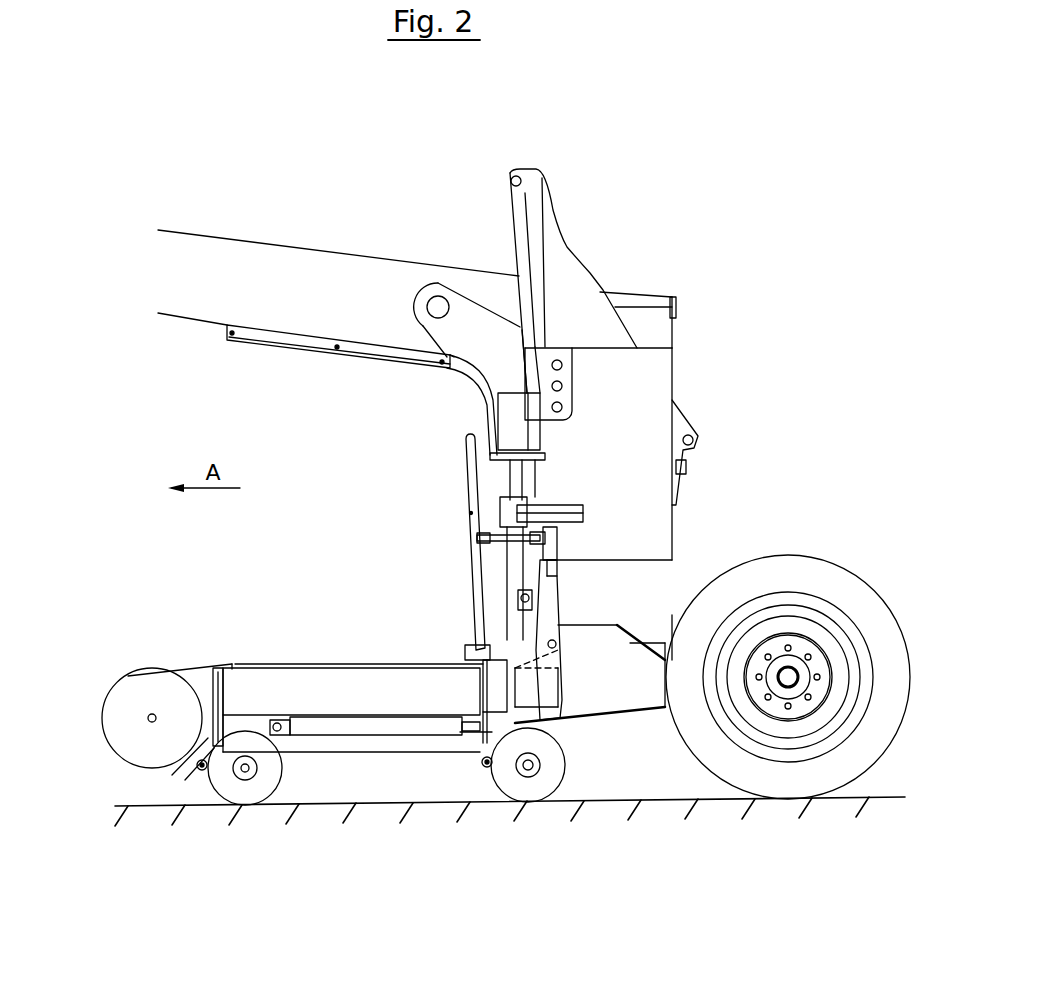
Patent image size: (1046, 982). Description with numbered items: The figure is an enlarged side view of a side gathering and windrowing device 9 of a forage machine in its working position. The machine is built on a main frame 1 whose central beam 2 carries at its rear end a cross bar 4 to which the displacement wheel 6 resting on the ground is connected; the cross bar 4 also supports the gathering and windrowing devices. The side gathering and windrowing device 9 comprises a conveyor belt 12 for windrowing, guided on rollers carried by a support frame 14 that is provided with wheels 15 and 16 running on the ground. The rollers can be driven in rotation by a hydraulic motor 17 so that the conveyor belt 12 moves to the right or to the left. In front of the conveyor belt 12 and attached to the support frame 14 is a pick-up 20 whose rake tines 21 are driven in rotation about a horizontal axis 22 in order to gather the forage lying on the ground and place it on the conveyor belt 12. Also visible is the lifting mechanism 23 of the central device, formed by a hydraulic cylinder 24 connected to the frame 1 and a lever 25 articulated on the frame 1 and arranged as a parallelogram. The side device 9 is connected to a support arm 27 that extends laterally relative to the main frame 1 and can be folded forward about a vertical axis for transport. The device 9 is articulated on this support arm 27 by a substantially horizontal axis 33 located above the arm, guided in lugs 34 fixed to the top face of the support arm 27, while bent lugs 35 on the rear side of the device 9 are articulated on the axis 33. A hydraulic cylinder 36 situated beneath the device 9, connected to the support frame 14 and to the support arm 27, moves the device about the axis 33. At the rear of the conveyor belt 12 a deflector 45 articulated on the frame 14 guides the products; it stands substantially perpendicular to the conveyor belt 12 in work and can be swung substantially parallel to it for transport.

The main frame 1 is at (639, 283).
The central beam 2 is at (217, 253).
The cross bar 4 is at (686, 360).
The displacement wheel 6 is at (778, 760).
The side gathering and windrowing device 9 is at (188, 650).
The conveyor belt 12 is at (343, 666).
The support frame 14 is at (208, 740).
The wheel 15 is at (534, 787).
The wheel 16 is at (241, 788).
The hydraulic motor 17 is at (488, 767).
The pick-up 20 is at (132, 668).
The rake tines 21 is at (133, 768).
The horizontal axis 22 is at (148, 722).
The lifting mechanism 23 is at (505, 223).
The hydraulic cylinder 24 is at (515, 267).
The lever 25 is at (683, 468).
The support arm 27 is at (576, 717).
The axis 33 is at (613, 700).
The lug 34 is at (595, 757).
The bent lug 35 is at (476, 636).
The hydraulic cylinder 36 is at (378, 722).
The deflector 45 is at (465, 502).